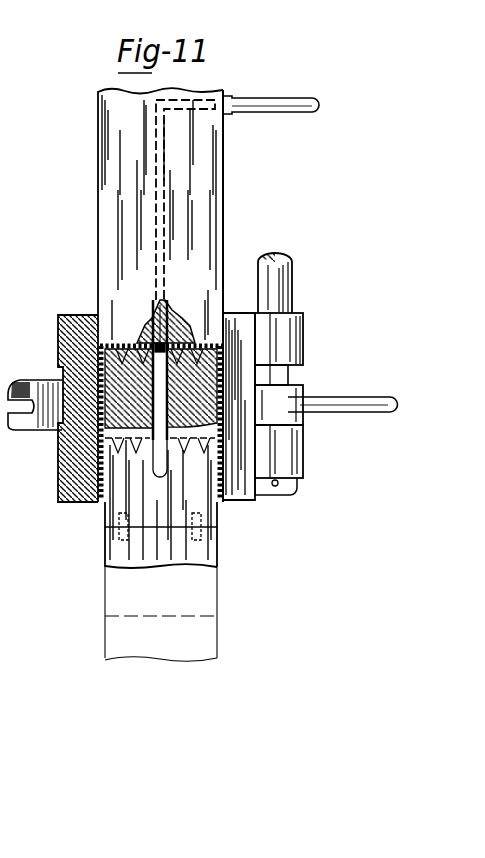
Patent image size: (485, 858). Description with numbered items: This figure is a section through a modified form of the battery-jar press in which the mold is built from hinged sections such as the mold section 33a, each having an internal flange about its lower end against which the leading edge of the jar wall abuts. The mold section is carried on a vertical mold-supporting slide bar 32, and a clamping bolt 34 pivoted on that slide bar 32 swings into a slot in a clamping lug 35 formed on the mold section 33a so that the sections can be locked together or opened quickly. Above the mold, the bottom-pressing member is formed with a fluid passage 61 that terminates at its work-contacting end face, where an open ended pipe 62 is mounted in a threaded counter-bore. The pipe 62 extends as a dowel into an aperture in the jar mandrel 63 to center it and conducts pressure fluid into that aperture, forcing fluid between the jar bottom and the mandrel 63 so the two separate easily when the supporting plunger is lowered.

The fluid passage 61 is at (172, 243).
The slide bar 32 is at (277, 280).
The clamping bolt 34 is at (338, 405).
The clamping lug 35 is at (35, 390).
The open ended pipe 62 is at (154, 388).
The mold section 33a is at (78, 473).
The jar mandrel 63 is at (183, 488).